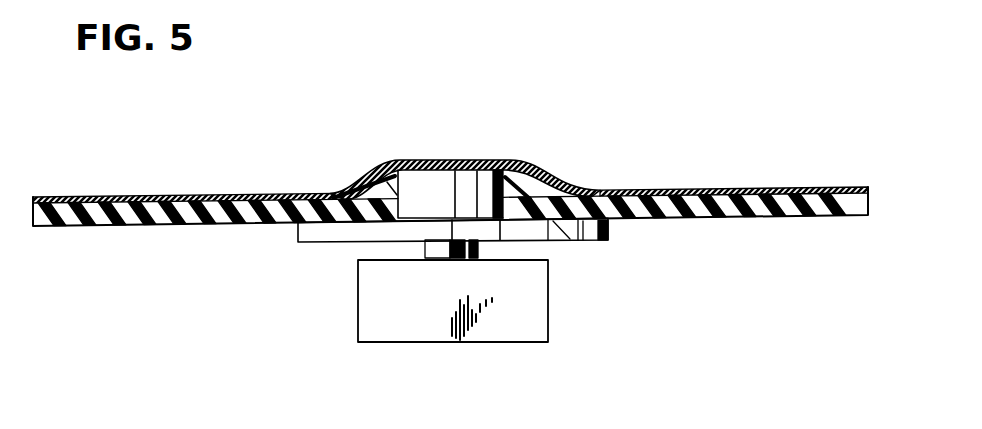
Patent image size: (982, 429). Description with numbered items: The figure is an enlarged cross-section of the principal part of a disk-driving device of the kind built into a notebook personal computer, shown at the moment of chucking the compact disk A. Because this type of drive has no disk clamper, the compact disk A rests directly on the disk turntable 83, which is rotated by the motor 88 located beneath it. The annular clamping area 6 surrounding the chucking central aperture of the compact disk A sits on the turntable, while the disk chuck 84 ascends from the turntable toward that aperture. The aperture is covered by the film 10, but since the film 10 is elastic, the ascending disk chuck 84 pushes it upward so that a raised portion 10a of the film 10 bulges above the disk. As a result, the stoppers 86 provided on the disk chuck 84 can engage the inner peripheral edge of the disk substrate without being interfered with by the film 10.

The film 10 is at (80, 196).
The protruding portion of panel skin 10a is at (503, 159).
The stoppers 86 is at (372, 172).
The disk chuck 84 is at (420, 201).
The annular clamping area 6 is at (310, 245).
The disk turntable 83 is at (550, 242).
The motor 88 is at (398, 318).
The compact disk A is at (790, 217).